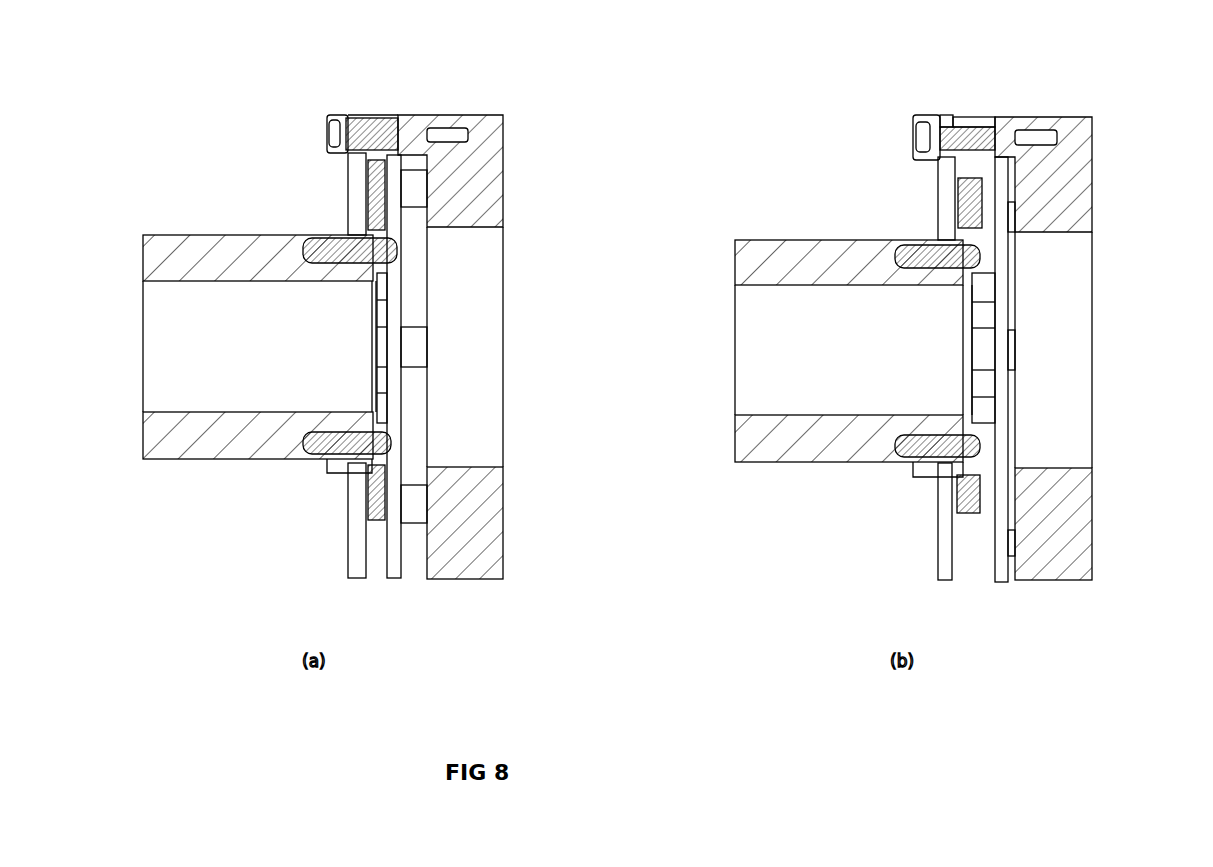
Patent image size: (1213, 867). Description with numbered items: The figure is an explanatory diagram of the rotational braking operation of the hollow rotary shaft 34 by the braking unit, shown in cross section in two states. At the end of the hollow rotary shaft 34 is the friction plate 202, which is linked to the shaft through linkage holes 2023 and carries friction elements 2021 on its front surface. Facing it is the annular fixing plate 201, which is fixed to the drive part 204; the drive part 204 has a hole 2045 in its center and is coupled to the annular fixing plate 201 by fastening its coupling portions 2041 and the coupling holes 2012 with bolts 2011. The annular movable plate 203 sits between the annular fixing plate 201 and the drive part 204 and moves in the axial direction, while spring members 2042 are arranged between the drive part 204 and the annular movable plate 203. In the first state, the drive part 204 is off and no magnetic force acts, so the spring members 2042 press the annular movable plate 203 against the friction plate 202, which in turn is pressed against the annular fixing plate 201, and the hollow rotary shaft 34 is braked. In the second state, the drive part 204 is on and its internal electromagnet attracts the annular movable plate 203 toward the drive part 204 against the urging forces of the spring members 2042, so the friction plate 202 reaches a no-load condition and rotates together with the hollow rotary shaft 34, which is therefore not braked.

The hollow rotary shaft 34 is at (197, 447).
The annular fixing plate 201 is at (350, 548).
The bolt 2011 is at (327, 120).
The coupling hole 2012 is at (360, 133).
The friction element 2021 is at (395, 180).
The linkage hole 2023 is at (312, 240).
The friction plate 202 is at (370, 578).
The annular movable plate 203 is at (395, 578).
The drive part 204 is at (493, 565).
The coupling portion 2041 is at (970, 117).
The spring member 2042 is at (428, 185).
The hole 2045 is at (480, 440).